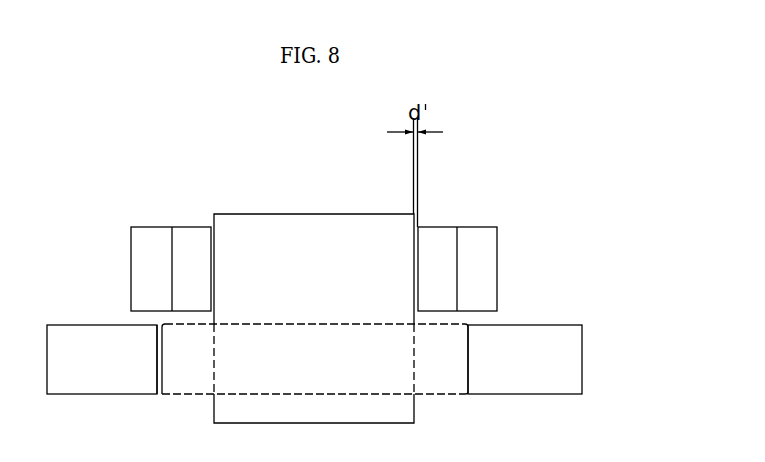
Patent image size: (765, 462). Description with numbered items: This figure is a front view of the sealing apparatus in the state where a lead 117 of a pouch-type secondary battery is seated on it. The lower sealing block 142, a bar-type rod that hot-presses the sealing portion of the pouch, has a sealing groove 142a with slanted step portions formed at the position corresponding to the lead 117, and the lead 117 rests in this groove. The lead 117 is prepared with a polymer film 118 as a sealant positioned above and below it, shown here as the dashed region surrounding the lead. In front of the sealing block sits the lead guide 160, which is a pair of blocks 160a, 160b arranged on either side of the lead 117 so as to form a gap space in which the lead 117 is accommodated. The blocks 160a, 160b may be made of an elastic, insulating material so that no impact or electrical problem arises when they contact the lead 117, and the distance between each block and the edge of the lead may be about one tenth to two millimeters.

The lead 117 is at (318, 417).
The polymer film 118 is at (432, 398).
The lower sealing block 142 is at (505, 387).
The sealing groove 142a is at (158, 394).
The lead guide 160 is at (377, 151).
The block 160a is at (183, 235).
The block 160b is at (445, 237).